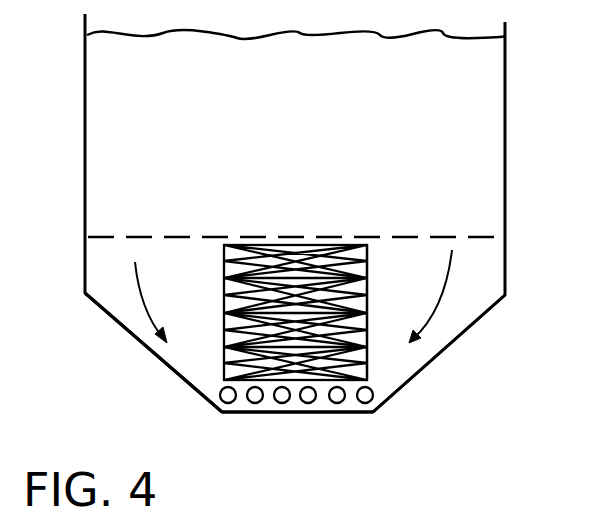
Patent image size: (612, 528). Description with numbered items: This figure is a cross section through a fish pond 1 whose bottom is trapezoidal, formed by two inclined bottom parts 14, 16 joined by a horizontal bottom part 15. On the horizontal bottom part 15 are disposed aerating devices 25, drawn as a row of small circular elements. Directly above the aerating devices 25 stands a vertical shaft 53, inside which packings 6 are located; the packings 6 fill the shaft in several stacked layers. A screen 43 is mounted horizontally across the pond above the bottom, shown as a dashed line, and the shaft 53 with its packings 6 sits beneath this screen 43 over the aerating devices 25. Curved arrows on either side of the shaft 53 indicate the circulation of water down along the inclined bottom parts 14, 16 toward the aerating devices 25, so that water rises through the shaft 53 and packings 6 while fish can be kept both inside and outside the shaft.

The fish pond 1 is at (474, 90).
The screen 43 is at (172, 237).
The inclined bottom part 14 is at (120, 327).
The inclined bottom part 16 is at (425, 367).
The horizontal bottom part 15 is at (323, 410).
The packings 6 is at (247, 299).
The vertical shaft 53 is at (367, 310).
The aerating devices 25 is at (280, 390).